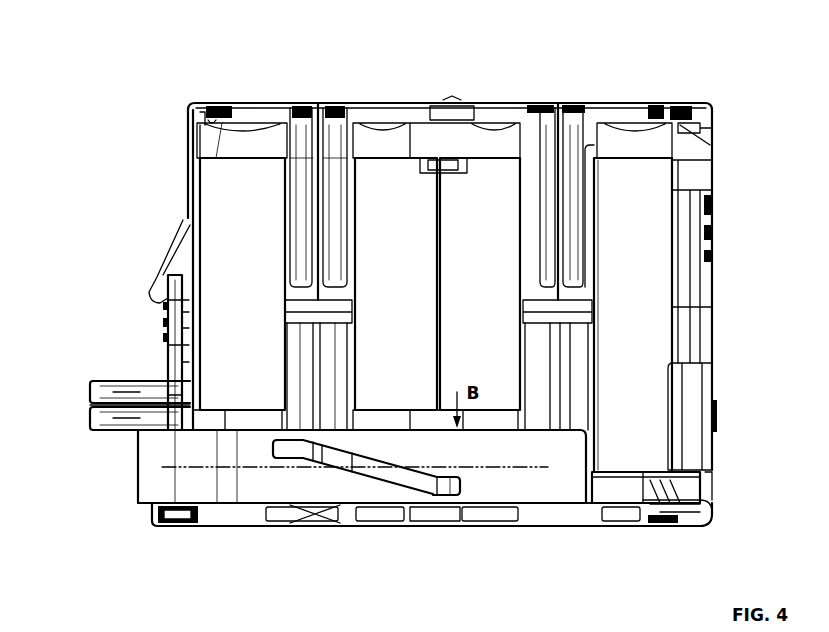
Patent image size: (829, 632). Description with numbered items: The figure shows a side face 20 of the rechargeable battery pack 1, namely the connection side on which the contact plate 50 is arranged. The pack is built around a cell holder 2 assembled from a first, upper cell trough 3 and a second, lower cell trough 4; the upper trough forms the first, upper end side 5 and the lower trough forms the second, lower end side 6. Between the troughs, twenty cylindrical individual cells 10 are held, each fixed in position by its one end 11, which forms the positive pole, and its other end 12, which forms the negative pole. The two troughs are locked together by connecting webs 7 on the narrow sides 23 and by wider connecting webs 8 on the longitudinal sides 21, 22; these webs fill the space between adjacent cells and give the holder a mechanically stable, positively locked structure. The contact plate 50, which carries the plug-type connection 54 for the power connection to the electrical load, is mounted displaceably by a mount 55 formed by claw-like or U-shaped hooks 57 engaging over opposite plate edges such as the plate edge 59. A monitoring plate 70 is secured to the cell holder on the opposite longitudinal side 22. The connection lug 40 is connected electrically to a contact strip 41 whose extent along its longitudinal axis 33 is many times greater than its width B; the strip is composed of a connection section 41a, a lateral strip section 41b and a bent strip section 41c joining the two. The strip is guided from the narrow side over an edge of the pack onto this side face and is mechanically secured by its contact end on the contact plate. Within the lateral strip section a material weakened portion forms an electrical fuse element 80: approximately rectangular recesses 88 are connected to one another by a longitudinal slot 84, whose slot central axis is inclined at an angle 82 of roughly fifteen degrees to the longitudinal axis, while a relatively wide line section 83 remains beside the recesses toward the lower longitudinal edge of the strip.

The rechargeable battery pack 1 is at (168, 97).
The cell holder 2 is at (452, 94).
The first, upper cell trough 3 is at (255, 140).
The second, lower cell trough 4 is at (594, 513).
The first, upper end side 5 is at (564, 112).
The second, lower end side 6 is at (368, 527).
The connecting web 7 is at (338, 245).
The connecting web 8 is at (186, 210).
The individual cell 10 is at (228, 282).
The one end 11 is at (196, 117).
The other end 12 is at (197, 525).
The side face 20 is at (318, 94).
The longitudinal side 21 is at (183, 187).
The longitudinal side 22 is at (713, 397).
The narrow side 23 is at (630, 225).
The longitudinal axis 33 is at (493, 468).
The connection lug 40 is at (538, 528).
The contact strip 41 is at (295, 512).
The connection section 41a is at (137, 467).
The lateral strip section 41b is at (248, 492).
The bent strip section 41c is at (155, 482).
The contact plate 50 is at (176, 348).
The plug-type connection 54 is at (107, 417).
The mount 55 is at (138, 261).
The hook 57 is at (160, 280).
The plate edge 59 is at (176, 288).
The monitoring plate 70 is at (695, 280).
The electrical fuse element 80 is at (435, 512).
The angle 82 is at (443, 492).
The line section 83 is at (293, 450).
The longitudinal slot 84 is at (363, 475).
The recess 88 is at (438, 487).